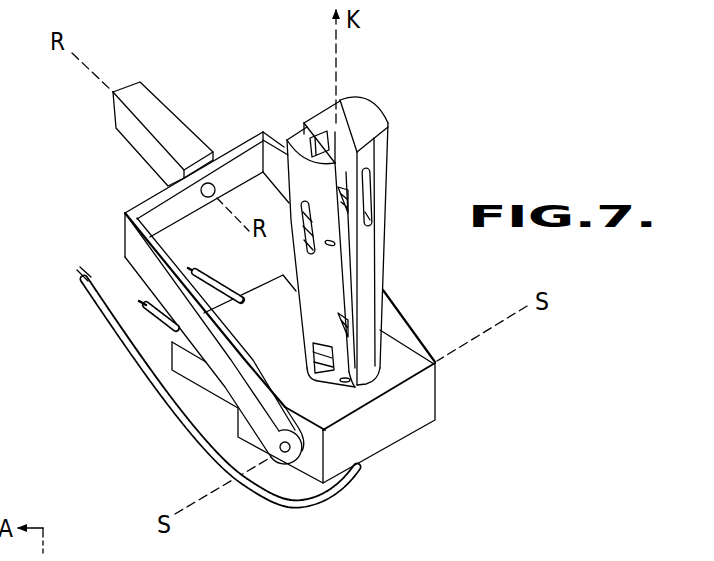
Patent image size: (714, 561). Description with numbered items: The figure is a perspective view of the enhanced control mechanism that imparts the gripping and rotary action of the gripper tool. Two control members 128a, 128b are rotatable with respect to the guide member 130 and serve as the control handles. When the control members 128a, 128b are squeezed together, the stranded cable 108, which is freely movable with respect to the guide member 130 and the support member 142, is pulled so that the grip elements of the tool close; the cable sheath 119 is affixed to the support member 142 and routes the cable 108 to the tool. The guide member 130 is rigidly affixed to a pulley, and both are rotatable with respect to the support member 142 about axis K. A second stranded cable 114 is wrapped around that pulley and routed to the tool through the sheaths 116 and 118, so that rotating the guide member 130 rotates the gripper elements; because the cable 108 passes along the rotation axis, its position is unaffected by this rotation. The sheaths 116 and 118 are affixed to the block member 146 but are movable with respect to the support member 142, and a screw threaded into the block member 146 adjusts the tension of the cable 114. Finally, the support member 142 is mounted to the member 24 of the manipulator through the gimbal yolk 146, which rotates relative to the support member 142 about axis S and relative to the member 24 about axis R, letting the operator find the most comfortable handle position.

The member of the manipulator 24 is at (165, 102).
The stranded cable 108 is at (80, 280).
The stranded cable 114 is at (138, 300).
The sheath 116 is at (157, 318).
The sheath 118 is at (210, 286).
The cable sheath 119 is at (291, 509).
The control member 128a is at (383, 110).
The control member 128b is at (292, 132).
The guide member 130 is at (323, 108).
The support member 142 is at (400, 440).
The block member / gimbal yolk 146 is at (141, 200).